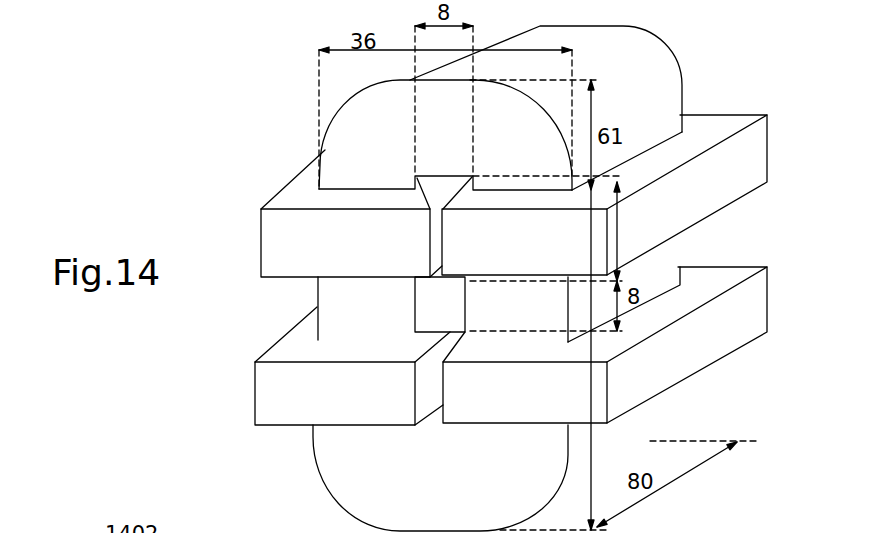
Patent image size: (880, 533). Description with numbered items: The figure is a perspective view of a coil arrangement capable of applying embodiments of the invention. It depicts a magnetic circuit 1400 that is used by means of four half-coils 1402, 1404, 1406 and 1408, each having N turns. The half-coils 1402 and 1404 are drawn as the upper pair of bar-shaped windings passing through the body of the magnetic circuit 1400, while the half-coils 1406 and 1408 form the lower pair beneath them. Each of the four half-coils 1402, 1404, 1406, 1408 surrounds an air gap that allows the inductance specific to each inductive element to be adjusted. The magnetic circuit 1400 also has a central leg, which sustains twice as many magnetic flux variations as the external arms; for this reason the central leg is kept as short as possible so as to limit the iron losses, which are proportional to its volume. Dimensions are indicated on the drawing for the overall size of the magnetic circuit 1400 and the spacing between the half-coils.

The magnetic circuit 1400 is at (254, 122).
The half-coil 1402 is at (291, 195).
The half-coil 1404 is at (752, 150).
The half-coil 1406 is at (290, 348).
The half-coil 1408 is at (752, 313).